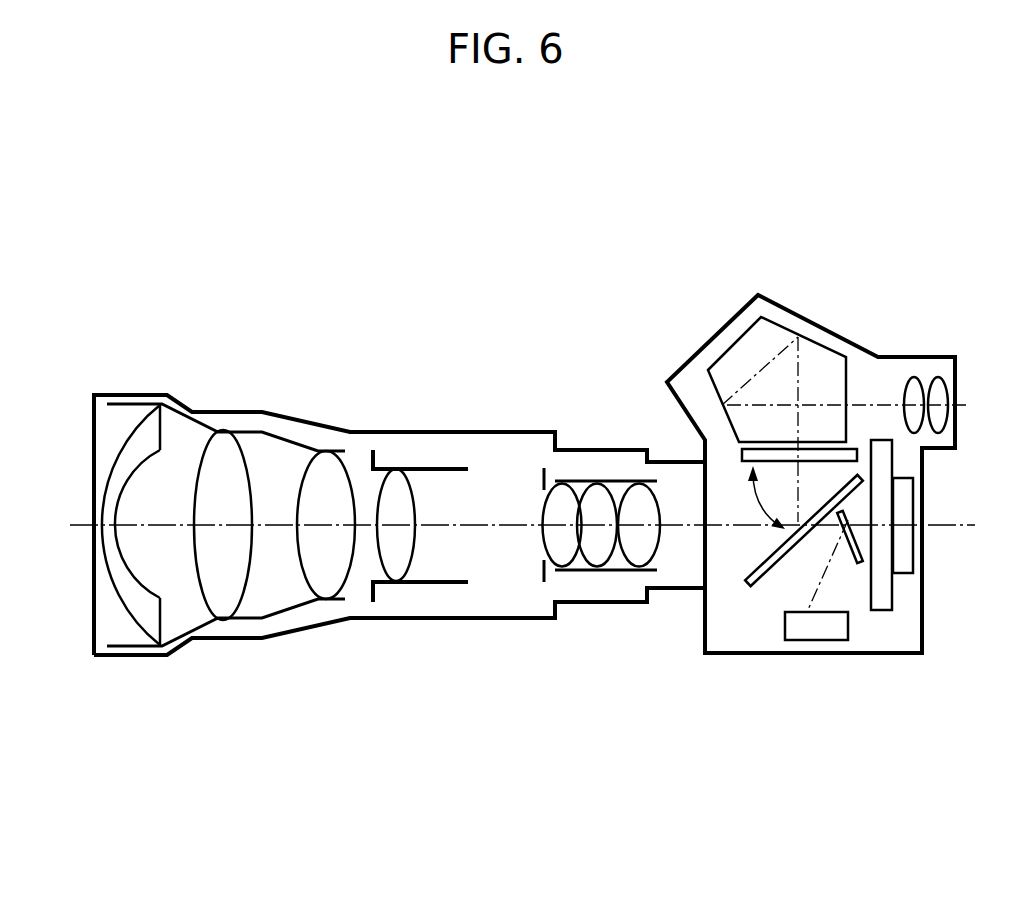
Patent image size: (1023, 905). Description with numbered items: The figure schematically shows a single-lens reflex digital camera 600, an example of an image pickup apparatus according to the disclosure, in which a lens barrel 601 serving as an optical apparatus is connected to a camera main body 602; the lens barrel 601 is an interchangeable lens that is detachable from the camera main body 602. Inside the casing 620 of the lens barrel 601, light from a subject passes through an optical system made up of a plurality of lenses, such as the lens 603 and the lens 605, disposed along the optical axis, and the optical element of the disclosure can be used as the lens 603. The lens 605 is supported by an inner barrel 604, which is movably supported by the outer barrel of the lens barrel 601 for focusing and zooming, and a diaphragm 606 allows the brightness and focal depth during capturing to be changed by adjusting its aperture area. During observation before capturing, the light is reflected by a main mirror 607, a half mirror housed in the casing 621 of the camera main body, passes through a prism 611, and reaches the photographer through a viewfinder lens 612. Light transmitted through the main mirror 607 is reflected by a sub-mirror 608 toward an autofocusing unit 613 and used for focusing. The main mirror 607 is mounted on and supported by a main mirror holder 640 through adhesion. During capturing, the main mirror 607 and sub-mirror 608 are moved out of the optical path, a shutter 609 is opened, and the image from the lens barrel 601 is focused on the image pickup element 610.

The single-lens reflex digital camera 600 is at (567, 137).
The lens barrel 601 is at (98, 235).
The camera main body 602 is at (693, 235).
The lens 603 is at (163, 403).
The inner barrel 604 is at (419, 468).
The lens 605 is at (393, 565).
The diaphragm 606 is at (544, 468).
The main mirror 607 is at (748, 575).
The sub-mirror 608 is at (857, 540).
The shutter 609 is at (880, 610).
The image pickup element 610 is at (905, 558).
The prism 611 is at (829, 375).
The viewfinder lens 612 is at (945, 377).
The autofocusing (AF) unit 613 is at (820, 640).
The casing 620 is at (303, 418).
The casing 621 is at (687, 360).
The main mirror holder 640 is at (752, 588).